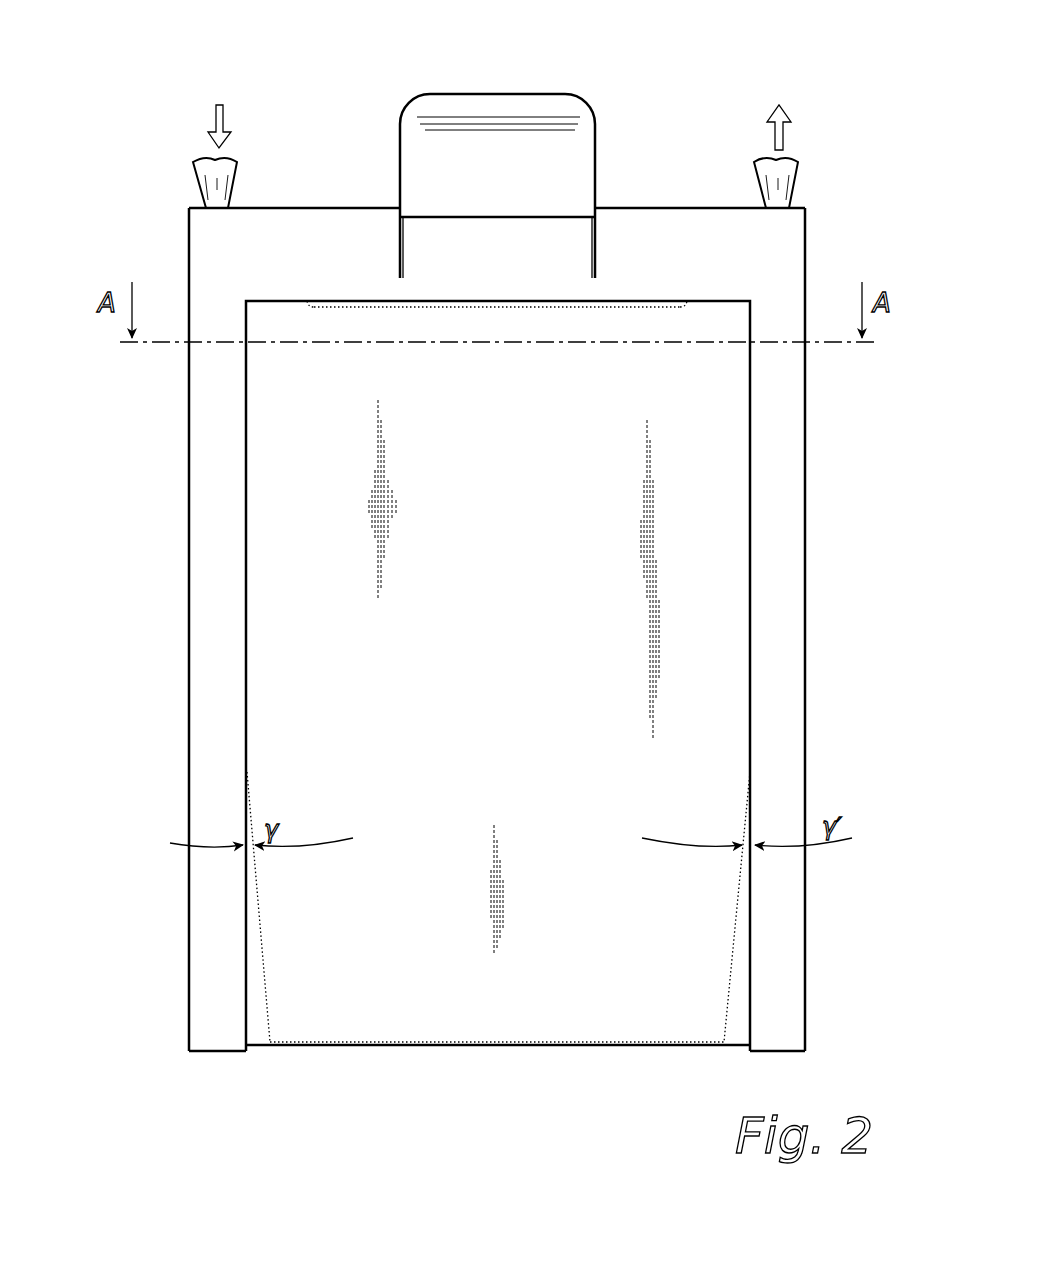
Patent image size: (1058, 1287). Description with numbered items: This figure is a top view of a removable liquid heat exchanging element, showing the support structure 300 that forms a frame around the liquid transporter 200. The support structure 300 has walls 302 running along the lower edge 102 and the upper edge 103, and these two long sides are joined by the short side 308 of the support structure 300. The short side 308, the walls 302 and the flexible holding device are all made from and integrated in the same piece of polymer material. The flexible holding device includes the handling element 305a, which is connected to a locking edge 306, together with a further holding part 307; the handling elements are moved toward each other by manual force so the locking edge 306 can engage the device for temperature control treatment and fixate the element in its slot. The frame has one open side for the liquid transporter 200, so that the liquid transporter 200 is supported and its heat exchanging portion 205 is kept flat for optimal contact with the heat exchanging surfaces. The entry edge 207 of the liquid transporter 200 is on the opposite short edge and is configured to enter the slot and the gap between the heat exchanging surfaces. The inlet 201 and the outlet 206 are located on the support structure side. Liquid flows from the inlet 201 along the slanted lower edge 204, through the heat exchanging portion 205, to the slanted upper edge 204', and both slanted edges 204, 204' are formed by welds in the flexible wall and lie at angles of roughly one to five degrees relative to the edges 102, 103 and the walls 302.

The lower edge 102 is at (153, 676).
The upper edge 103 is at (840, 608).
The liquid transporter 200 is at (605, 538).
The inlet 201 is at (219, 143).
The slanted lower edge 204 is at (327, 907).
The slanted upper edge 204' is at (667, 907).
The heat exchanging portion 205 is at (517, 683).
The outlet 206 is at (780, 143).
The entry edge 207 is at (418, 1052).
The support structure 300 is at (220, 598).
The walls 302 is at (188, 778).
The handling element 305a is at (512, 178).
The locking edge 306 is at (545, 212).
The flexible holding device part 307 is at (598, 243).
The short side 308 is at (497, 275).